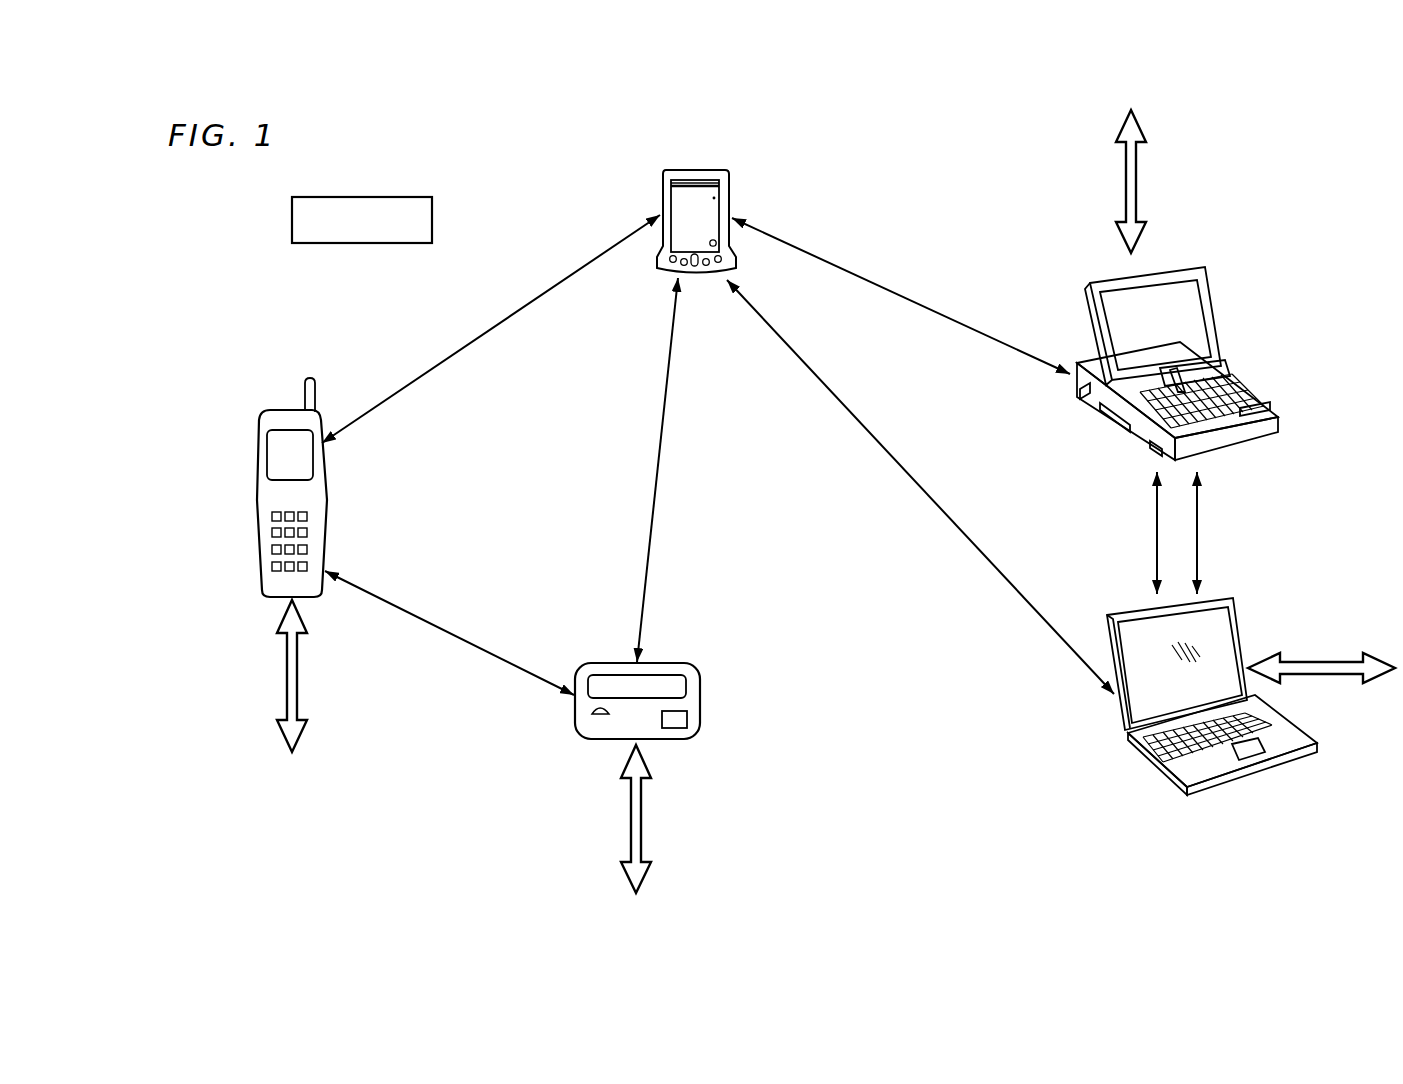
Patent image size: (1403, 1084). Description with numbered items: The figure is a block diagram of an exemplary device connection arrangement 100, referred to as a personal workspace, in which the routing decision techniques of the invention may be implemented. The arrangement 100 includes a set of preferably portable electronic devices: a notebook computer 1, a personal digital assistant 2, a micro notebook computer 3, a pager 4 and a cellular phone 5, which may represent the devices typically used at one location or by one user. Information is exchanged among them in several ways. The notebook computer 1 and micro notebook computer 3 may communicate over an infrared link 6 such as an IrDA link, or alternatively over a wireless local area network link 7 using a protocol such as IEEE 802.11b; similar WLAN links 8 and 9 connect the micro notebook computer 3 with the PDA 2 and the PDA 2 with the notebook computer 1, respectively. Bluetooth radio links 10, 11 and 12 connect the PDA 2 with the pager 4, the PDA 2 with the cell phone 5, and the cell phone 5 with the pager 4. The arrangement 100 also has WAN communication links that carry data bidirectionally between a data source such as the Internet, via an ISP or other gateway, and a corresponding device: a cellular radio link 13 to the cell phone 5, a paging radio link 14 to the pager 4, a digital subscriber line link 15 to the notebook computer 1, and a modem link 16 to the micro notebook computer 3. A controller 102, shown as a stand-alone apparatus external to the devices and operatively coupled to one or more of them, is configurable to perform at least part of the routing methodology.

The device connection arrangement 100 is at (966, 178).
The controller 102 is at (345, 197).
The notebook computer 1 is at (1238, 382).
The personal digital assistant 2 is at (730, 189).
The micro notebook computer 3 is at (1138, 752).
The pager 4 is at (678, 663).
The cellular phone 5 is at (284, 410).
The infrared link 6 is at (1199, 527).
The wireless local area network link 7 is at (1156, 522).
The wireless local area network link 8 is at (900, 470).
The wireless local area network link 9 is at (892, 293).
The Bluetooth radio link 10 is at (654, 462).
The Bluetooth radio link 11 is at (460, 349).
The Bluetooth radio link 12 is at (446, 624).
The cellular radio link 13 is at (286, 672).
The paging radio link 14 is at (630, 814).
The digital subscriber line link 15 is at (1138, 176).
The modem link 16 is at (1322, 662).